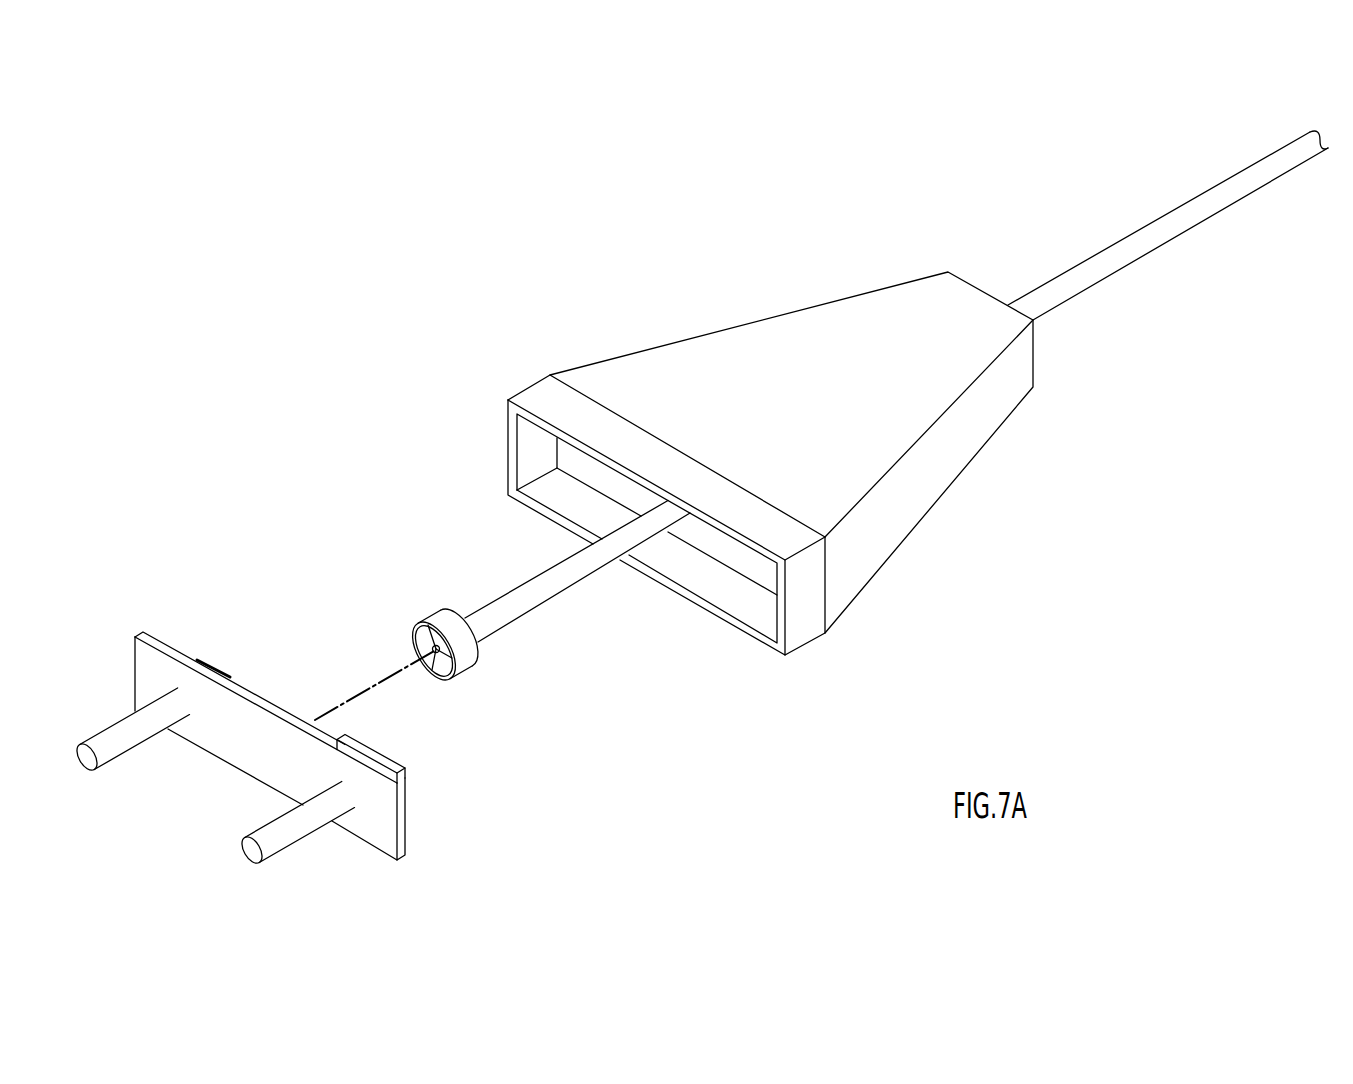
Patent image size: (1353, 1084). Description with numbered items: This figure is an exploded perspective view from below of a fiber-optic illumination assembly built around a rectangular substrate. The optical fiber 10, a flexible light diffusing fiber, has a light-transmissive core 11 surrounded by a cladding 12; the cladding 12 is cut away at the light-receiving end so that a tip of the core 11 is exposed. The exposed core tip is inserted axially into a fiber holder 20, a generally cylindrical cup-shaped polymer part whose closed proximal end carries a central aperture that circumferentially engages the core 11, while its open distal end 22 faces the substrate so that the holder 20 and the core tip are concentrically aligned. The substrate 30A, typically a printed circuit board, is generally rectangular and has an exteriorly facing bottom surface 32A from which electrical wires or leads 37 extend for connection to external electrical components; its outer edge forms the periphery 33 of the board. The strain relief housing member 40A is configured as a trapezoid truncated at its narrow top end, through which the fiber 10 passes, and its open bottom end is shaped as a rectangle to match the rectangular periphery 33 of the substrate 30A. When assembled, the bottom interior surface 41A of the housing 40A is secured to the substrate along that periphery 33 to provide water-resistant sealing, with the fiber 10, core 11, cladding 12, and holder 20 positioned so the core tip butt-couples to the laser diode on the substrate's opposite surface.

The optical fiber 10 is at (1277, 128).
The light-transmissive core 11 is at (434, 662).
The cladding 12 is at (557, 595).
The fiber holder 20 is at (467, 657).
The open distal end 22 is at (412, 635).
The substrate 30A is at (397, 860).
The bottom surface 32A is at (273, 755).
The periphery 33 is at (403, 817).
The electrical leads 37 is at (122, 752).
The strain relief housing member 40A is at (995, 432).
The bottom interior surface 41A is at (757, 607).